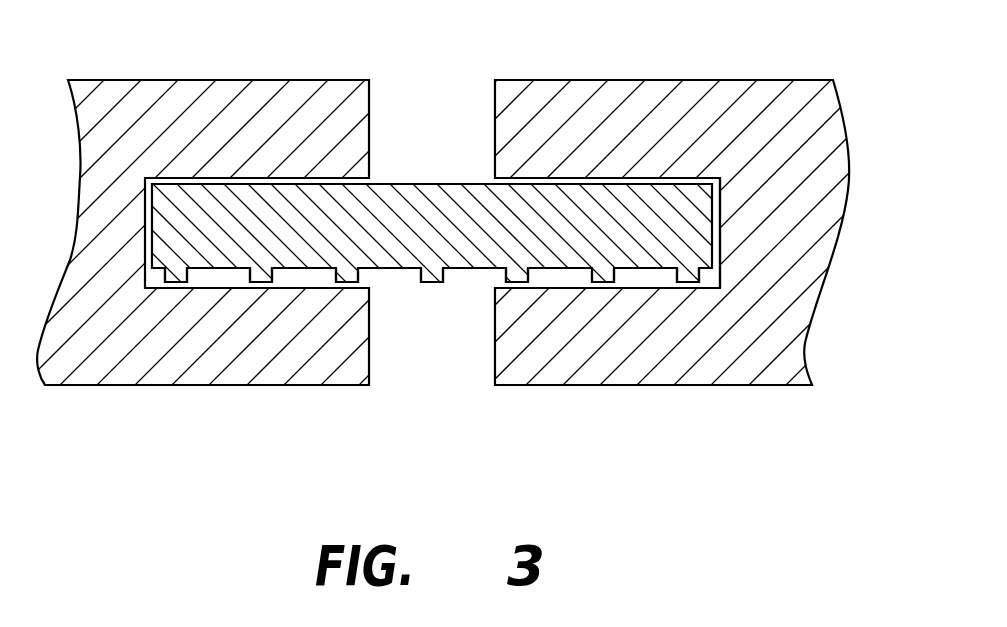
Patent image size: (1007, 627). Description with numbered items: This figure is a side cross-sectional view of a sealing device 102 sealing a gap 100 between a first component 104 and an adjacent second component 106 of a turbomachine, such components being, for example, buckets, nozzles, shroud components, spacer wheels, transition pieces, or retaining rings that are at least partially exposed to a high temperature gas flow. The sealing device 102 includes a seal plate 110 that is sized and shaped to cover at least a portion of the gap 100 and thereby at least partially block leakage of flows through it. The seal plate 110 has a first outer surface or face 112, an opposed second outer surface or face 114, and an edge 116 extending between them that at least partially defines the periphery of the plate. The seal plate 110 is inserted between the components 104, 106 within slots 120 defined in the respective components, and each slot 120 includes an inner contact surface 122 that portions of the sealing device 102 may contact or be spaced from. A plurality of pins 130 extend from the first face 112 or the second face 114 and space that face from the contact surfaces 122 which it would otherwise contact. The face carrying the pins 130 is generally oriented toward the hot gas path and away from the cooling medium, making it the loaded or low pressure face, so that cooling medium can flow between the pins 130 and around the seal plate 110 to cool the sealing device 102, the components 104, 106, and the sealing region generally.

The gap 100 is at (392, 98).
The sealing device 102 is at (468, 284).
The first component 104 is at (235, 73).
The second component 106 is at (662, 68).
The seal plate 110 is at (415, 202).
The first outer surface or face 112 is at (410, 270).
The second outer surface or face 114 is at (443, 183).
The edge 116 is at (720, 203).
The slot 120 is at (305, 281).
The inner contact surface 122 is at (213, 288).
The pins 130 is at (433, 278).